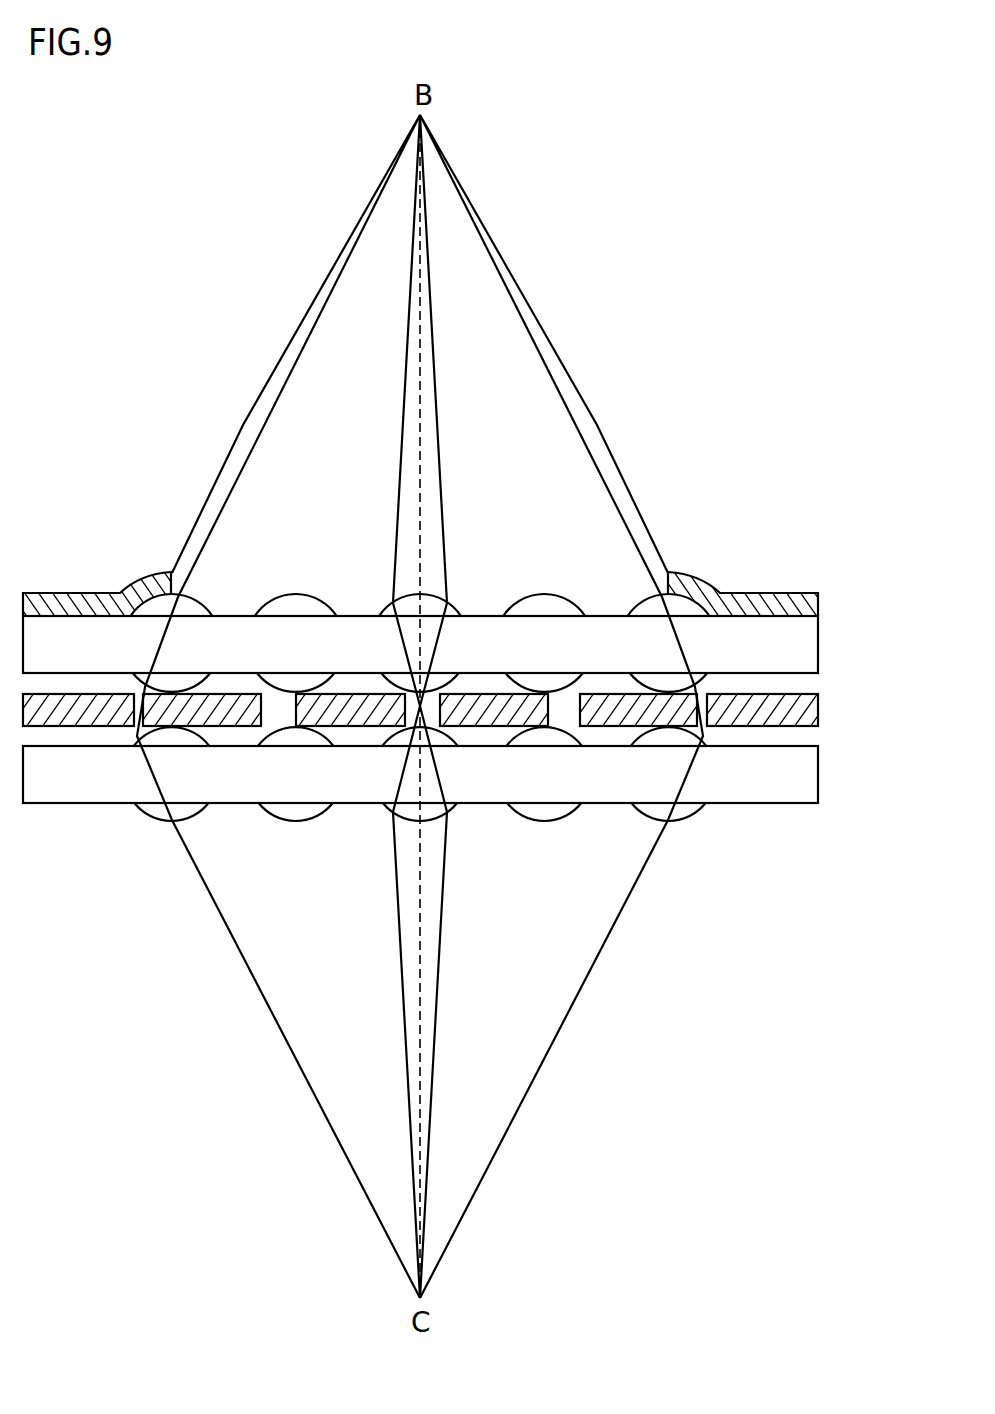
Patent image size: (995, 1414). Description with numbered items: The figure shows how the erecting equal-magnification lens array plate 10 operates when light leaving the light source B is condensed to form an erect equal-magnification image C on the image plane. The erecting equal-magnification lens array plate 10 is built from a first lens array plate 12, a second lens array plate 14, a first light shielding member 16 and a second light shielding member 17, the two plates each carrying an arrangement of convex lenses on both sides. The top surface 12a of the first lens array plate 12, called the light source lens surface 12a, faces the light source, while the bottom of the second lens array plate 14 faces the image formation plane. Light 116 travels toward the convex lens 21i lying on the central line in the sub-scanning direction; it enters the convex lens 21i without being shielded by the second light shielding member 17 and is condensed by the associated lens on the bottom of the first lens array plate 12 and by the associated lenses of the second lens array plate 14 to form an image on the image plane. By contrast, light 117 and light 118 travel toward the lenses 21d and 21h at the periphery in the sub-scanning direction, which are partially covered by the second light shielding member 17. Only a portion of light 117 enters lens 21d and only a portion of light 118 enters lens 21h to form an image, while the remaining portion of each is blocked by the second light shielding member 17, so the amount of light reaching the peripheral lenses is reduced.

The erecting equal-magnification lens array plate 10 is at (445, 654).
The first lens array plate 12 is at (456, 597).
The top surface (light source lens surface) of the first lens array plate 12a is at (246, 616).
The second lens array plate 14 is at (808, 775).
The first light shielding member 16 is at (813, 710).
The second light shielding member 17 is at (798, 594).
The convex lens at the periphery in the sub-scanning direction 21h is at (197, 596).
The convex lens located on the central line 21i is at (404, 594).
The convex lens at the periphery in the sub-scanning direction 21d is at (648, 597).
The light traveling toward the central convex lens 116 is at (456, 410).
The light traveling toward the peripheral lens 21d 117 is at (574, 341).
The light traveling toward the peripheral lens 21h 118 is at (258, 339).